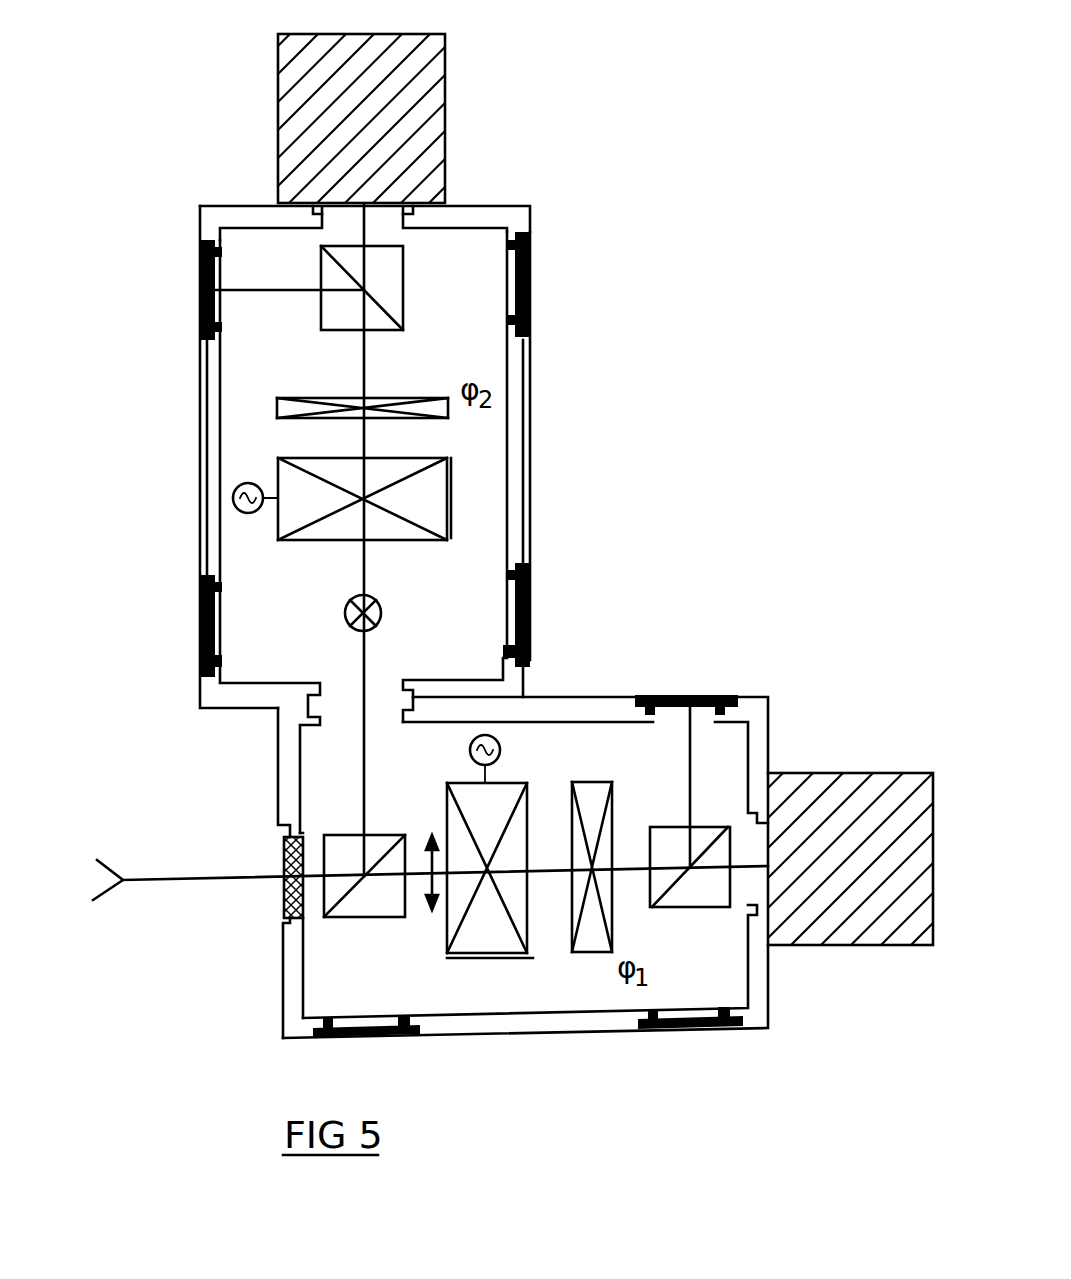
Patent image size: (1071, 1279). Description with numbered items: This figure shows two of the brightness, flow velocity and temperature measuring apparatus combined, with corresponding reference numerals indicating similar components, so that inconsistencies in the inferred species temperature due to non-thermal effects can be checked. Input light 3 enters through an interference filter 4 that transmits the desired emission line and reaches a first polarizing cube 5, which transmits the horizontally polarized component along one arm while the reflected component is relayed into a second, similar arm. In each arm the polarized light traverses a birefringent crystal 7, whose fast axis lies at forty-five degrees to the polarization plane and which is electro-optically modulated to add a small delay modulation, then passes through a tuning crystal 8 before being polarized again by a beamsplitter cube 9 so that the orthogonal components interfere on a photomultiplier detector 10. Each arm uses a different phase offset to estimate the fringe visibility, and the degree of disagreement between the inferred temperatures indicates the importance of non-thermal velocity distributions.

The light 3 is at (123, 880).
The interference filter 4 is at (283, 912).
The first polarizing cube 5 is at (377, 840).
The birefringent crystal 7 is at (308, 533).
The tuning crystal 8 is at (425, 398).
The beamsplitter cube 9 is at (395, 280).
The photomultiplier detector 10 is at (443, 90).